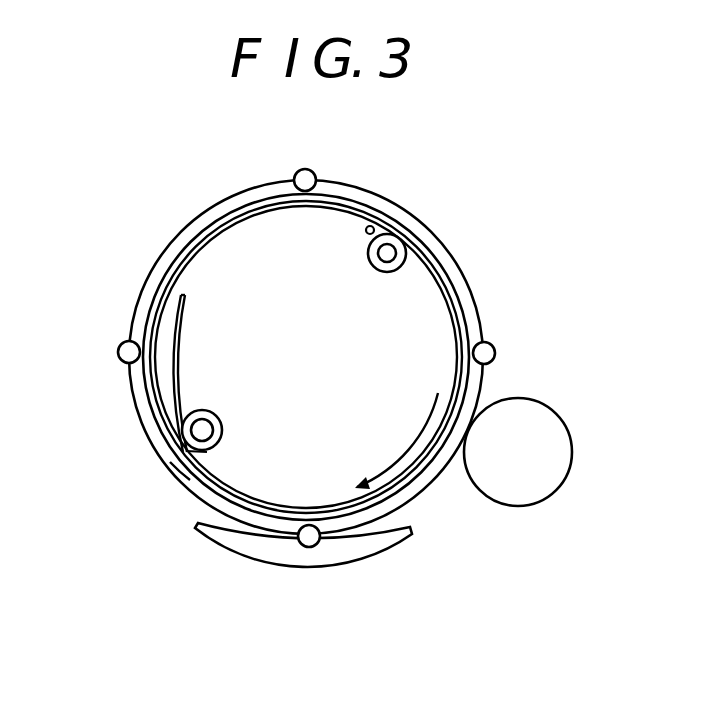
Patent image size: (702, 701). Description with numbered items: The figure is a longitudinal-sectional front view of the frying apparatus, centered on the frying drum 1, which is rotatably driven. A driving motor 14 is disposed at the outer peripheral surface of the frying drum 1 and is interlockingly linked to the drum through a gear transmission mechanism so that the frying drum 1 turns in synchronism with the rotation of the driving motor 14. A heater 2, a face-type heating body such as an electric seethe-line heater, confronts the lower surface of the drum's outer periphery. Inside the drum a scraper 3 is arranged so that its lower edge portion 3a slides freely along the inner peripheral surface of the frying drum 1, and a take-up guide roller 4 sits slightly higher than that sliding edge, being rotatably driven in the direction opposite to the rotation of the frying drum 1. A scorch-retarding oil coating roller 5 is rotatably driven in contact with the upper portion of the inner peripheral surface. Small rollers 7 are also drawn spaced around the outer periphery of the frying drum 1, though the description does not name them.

The frying drum 1 is at (460, 300).
The heater 2 is at (407, 530).
The scraper 3 is at (181, 299).
The lower edge portion 3a is at (173, 470).
The take-up guide roller 4 is at (185, 486).
The scorch-retarding oil coating roller 5 is at (389, 252).
The guide rollers 7 is at (299, 176).
The driving motor 14 is at (547, 477).